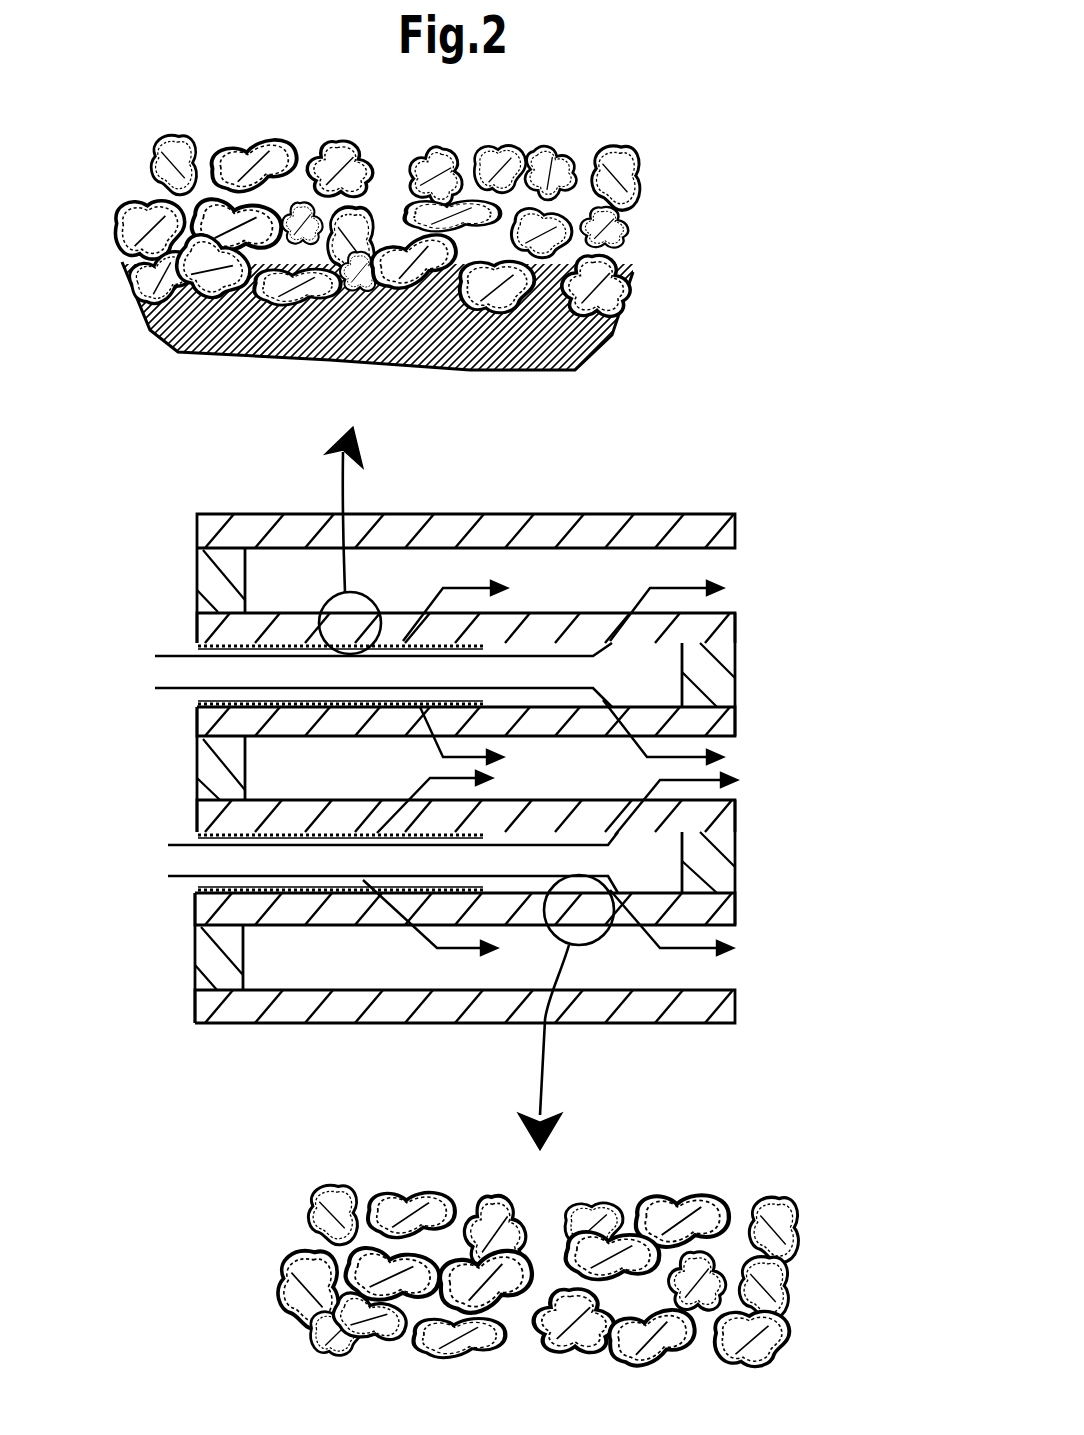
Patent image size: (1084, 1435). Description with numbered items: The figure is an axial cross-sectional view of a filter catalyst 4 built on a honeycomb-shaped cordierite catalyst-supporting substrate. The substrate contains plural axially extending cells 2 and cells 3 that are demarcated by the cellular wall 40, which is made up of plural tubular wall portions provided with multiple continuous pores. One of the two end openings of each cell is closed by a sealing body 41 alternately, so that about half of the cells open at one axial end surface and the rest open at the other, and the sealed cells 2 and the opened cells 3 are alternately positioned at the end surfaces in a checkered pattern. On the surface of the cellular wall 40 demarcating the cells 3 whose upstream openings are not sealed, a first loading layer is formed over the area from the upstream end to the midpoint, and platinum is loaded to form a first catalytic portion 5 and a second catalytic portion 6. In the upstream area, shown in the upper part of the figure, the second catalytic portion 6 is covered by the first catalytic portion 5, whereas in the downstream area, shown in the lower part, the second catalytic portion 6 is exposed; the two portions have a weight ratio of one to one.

The cells 2 is at (415, 575).
The cells 3 is at (572, 665).
The filter catalyst 4 is at (792, 699).
The first catalytic portion 5 is at (613, 336).
The second catalytic portion 6 is at (633, 232).
The cellular wall 40 is at (612, 178).
The sealing body 41 is at (222, 571).